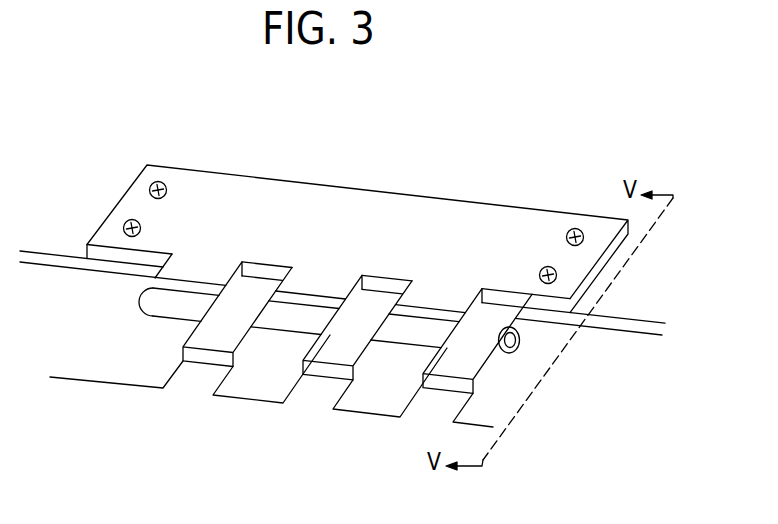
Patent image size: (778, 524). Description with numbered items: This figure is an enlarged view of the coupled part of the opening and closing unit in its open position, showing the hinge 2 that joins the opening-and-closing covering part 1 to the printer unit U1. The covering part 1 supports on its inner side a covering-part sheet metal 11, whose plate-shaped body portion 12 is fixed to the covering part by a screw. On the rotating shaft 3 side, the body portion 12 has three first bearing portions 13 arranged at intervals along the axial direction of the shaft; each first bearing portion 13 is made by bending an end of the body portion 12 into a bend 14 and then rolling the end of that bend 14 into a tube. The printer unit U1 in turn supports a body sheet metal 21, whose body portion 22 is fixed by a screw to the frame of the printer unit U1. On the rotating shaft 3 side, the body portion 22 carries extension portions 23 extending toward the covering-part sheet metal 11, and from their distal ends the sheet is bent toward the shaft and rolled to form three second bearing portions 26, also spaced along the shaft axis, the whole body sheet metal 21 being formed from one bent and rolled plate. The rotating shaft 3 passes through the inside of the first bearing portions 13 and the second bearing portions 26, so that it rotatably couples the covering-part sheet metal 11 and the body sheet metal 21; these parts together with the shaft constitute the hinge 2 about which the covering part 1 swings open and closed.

The opening-and-closing covering part 1 is at (618, 376).
The hinge 2 is at (131, 101).
The rotating shaft 3 is at (520, 345).
The covering-part sheet metal 11 is at (60, 359).
The body portion 12 is at (141, 446).
The first bearing portion 13 is at (236, 305).
The bend 14 is at (300, 397).
The body sheet metal 21 is at (403, 170).
The body portion 22 is at (525, 258).
The extension portion 23 is at (153, 282).
The second bearing portion 26 is at (302, 315).
The printer unit U1 is at (659, 298).